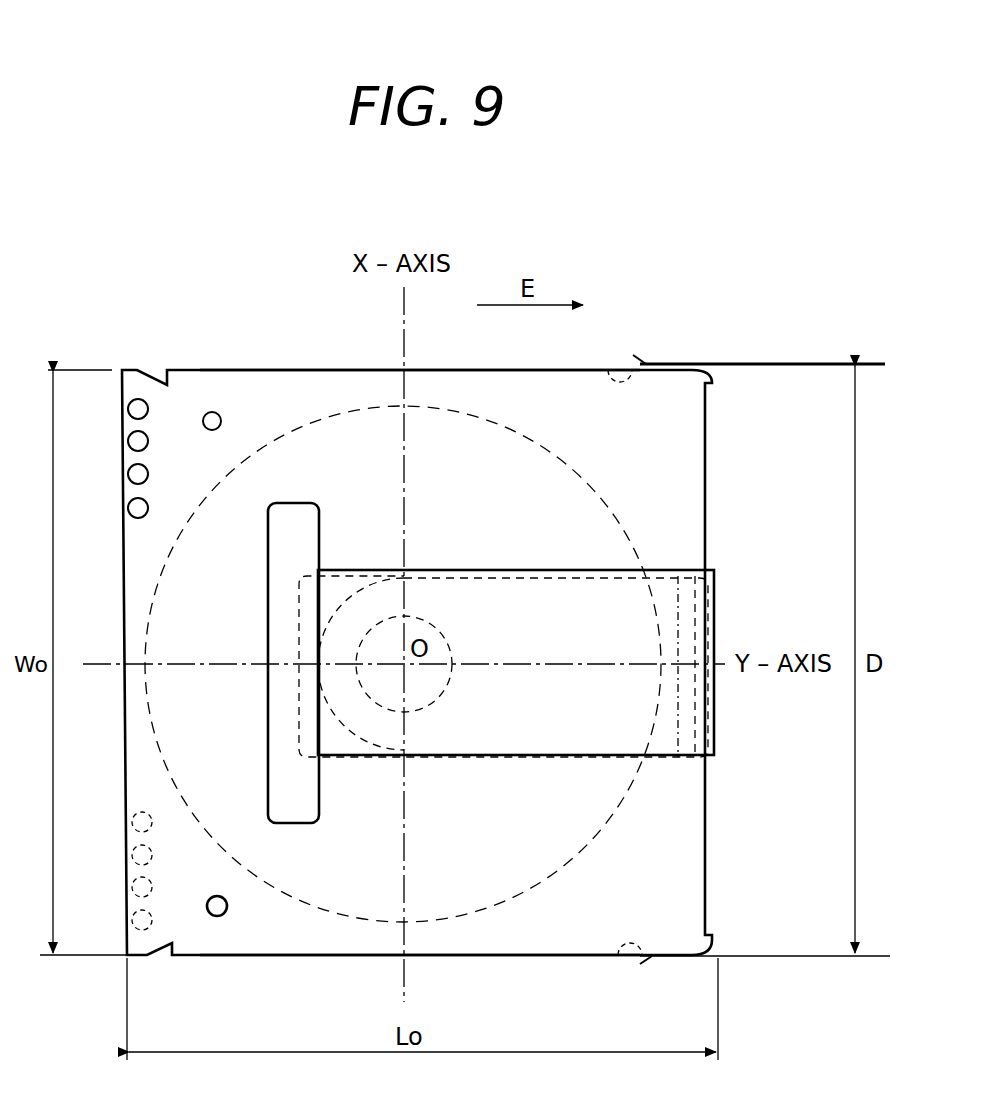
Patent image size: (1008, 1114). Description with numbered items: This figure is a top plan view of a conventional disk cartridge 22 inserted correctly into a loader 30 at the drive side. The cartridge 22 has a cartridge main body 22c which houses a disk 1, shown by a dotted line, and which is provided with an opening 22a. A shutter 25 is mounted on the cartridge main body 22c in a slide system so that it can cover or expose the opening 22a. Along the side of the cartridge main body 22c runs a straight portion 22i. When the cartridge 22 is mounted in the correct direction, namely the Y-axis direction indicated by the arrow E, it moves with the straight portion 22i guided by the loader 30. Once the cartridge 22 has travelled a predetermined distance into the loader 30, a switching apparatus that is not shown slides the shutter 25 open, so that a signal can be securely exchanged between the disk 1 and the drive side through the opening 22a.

The disk 1 is at (495, 447).
The cartridge 22 is at (203, 370).
The opening 22a is at (668, 580).
The cartridge main body 22c is at (593, 373).
The straight portion 22i is at (425, 368).
The shutter 25 is at (343, 574).
The loader 30 is at (742, 362).